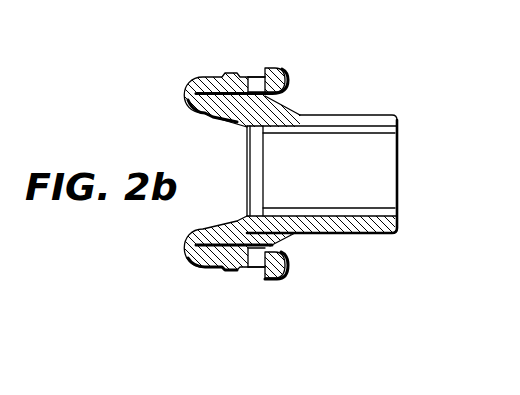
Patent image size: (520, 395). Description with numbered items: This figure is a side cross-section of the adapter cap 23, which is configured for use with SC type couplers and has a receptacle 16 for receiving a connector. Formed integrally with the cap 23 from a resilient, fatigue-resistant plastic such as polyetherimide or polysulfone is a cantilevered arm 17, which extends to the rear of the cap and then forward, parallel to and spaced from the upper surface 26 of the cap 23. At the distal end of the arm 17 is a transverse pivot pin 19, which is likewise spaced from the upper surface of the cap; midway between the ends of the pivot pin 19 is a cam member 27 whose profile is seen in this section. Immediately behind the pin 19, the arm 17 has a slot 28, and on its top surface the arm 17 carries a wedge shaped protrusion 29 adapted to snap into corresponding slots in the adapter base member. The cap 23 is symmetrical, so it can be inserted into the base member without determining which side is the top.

The receptacle 16 is at (372, 178).
The cantilevered arm 17 is at (193, 86).
The pivot pin 19 is at (290, 80).
The adapter cap 23 is at (372, 234).
The upper surface 26 is at (266, 96).
The cam member 27 is at (267, 70).
The slot 28 is at (256, 82).
The wedge shaped protrusion 29 is at (198, 80).